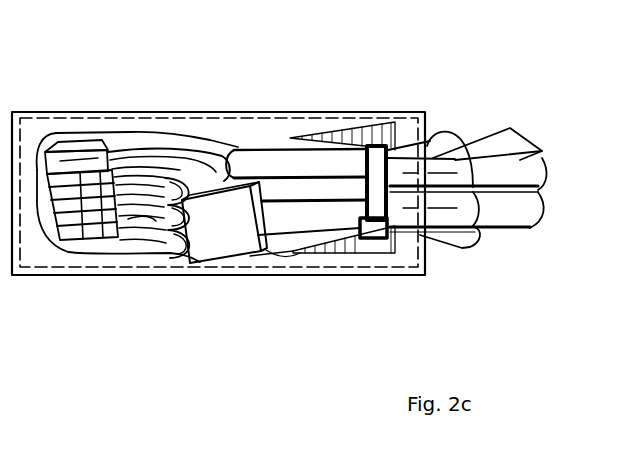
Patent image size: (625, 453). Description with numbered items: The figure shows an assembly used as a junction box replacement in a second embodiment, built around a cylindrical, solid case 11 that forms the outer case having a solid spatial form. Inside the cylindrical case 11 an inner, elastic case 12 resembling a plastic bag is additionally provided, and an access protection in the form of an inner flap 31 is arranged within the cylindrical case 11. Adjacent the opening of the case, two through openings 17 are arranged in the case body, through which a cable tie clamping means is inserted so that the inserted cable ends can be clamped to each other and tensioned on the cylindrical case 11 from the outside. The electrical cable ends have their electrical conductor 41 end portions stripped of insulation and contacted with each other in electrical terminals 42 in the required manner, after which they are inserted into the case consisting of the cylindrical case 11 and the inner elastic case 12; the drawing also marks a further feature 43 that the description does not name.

The cylindrical case 11 is at (121, 111).
The inner elastic case 12 is at (241, 119).
The through opening 17 is at (383, 241).
The inner flap 31 is at (368, 134).
The electrical conductor 41 is at (130, 223).
The electrical terminal 42 is at (230, 245).
The finger portion 43 is at (146, 223).